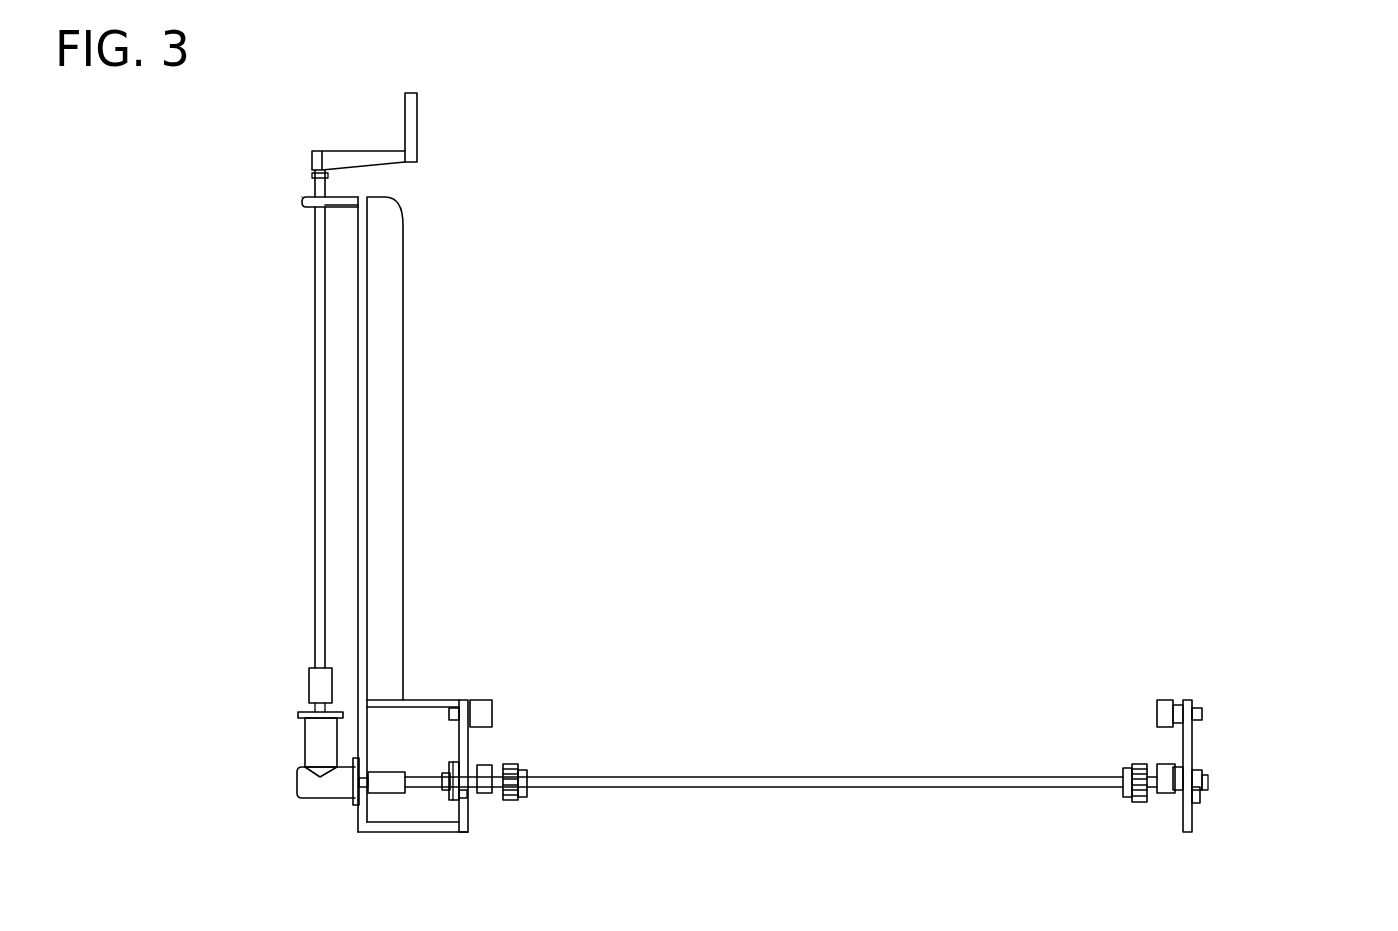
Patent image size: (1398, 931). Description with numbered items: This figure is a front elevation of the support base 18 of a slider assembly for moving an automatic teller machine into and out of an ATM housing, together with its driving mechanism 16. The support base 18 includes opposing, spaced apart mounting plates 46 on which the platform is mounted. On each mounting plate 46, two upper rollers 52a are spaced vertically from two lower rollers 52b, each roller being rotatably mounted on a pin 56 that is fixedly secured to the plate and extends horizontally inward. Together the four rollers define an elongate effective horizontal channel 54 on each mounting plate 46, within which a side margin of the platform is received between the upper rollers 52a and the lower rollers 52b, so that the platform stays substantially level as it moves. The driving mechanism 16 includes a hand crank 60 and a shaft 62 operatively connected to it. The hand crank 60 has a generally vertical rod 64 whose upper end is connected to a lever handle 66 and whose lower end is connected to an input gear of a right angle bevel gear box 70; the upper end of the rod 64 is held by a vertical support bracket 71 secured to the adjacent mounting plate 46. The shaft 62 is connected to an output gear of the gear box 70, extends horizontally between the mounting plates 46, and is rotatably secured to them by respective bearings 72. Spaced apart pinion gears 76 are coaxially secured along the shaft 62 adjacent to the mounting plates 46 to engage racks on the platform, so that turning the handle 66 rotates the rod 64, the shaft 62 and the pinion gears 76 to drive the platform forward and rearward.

The driving mechanism 16 is at (212, 322).
The support base 18 is at (1251, 783).
The mounting plates 46 is at (468, 748).
The upper rollers 52a is at (483, 700).
The lower rollers 52b is at (483, 795).
The effective horizontal channel 54 is at (492, 734).
The pin 56 is at (437, 707).
The hand crank 60 is at (312, 520).
The shaft 62 is at (742, 783).
The vertical rod 64 is at (320, 425).
The lever handle 66 is at (343, 150).
The right angle bevel gear box 70 is at (297, 785).
The vertical support bracket 71 is at (384, 308).
The bearings 72 is at (450, 800).
The pinion gears 76 is at (508, 800).